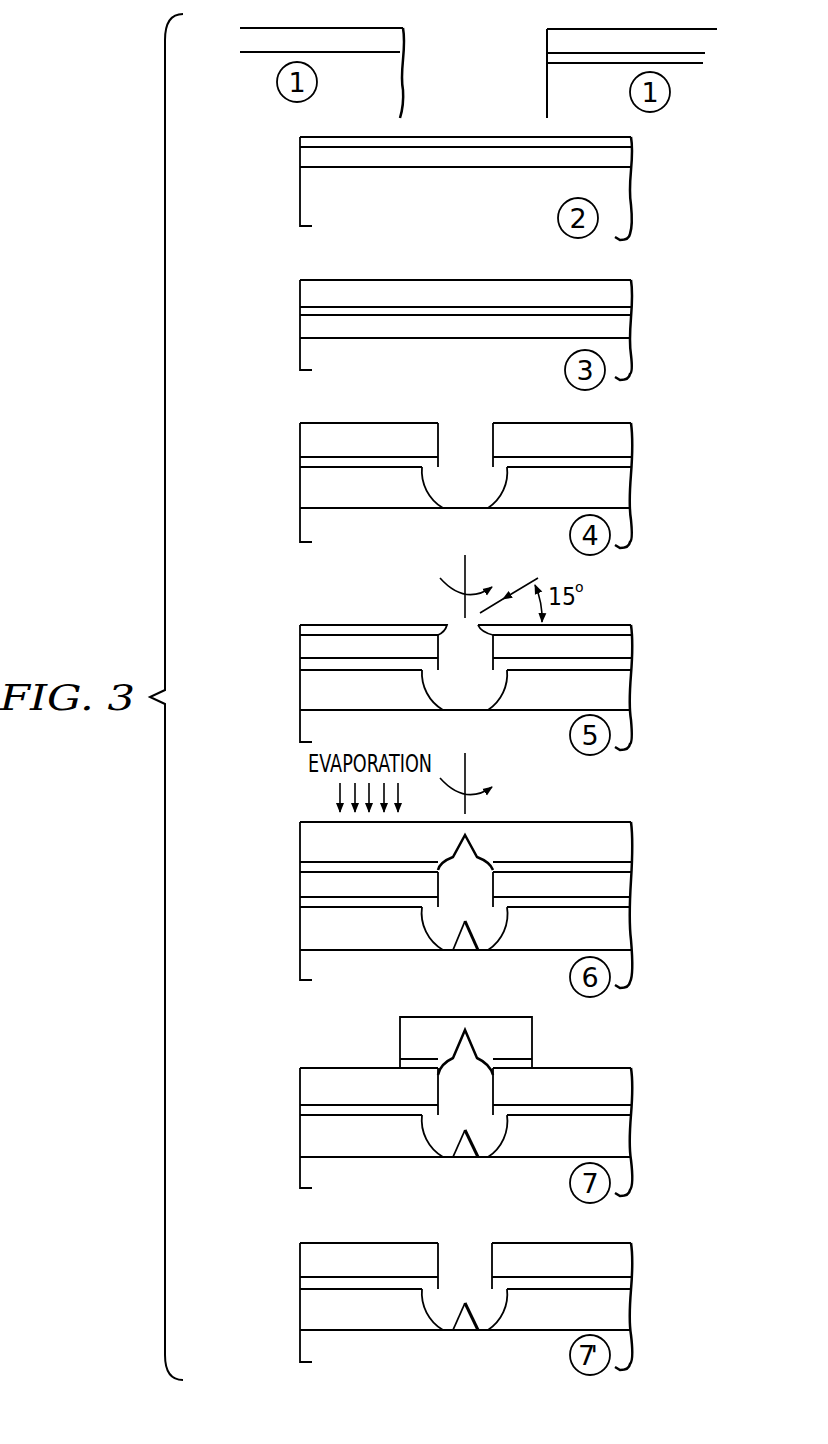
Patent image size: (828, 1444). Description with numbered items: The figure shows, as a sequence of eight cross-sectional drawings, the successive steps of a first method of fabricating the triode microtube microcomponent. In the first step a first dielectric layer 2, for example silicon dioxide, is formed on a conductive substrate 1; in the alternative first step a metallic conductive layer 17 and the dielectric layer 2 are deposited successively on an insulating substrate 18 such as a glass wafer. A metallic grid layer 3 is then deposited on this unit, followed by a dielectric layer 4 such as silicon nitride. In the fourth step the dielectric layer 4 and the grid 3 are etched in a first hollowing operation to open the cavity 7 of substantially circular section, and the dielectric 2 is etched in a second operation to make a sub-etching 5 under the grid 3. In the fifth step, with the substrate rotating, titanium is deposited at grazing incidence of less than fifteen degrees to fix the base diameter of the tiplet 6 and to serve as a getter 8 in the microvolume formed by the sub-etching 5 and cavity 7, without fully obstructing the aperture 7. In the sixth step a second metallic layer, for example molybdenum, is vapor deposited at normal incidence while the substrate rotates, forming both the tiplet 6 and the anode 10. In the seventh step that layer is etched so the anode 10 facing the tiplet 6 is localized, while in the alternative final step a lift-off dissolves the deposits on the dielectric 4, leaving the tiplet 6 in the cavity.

The conductive substrate 1 is at (398, 85).
The dielectric layer 2 is at (252, 42).
The metallic grid layer 3 is at (300, 137).
The dielectric layer 4 is at (300, 287).
The sub-etching 5 is at (465, 896).
The tiplet 6 is at (468, 942).
The cavity 7 is at (465, 856).
The getter 8 is at (300, 625).
The anode 10 is at (300, 846).
The metallic conductive layer 17 is at (700, 61).
The insulating substrate 18 is at (546, 94).